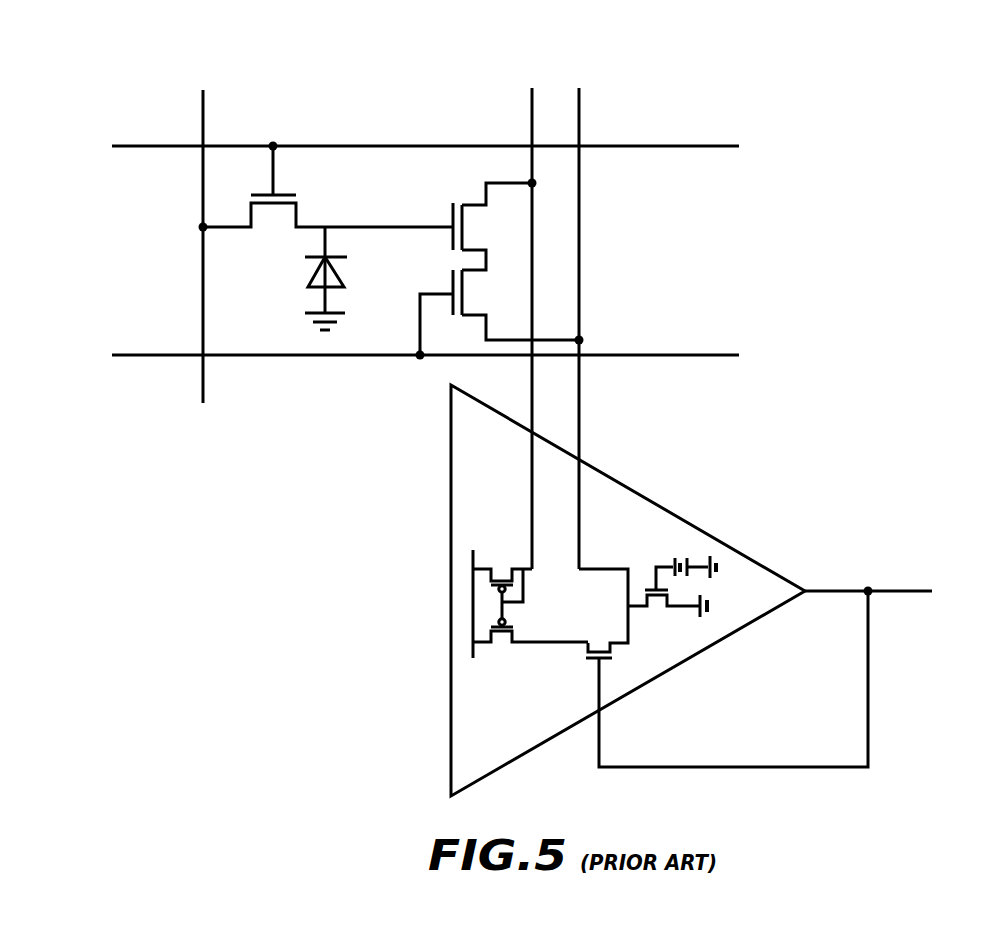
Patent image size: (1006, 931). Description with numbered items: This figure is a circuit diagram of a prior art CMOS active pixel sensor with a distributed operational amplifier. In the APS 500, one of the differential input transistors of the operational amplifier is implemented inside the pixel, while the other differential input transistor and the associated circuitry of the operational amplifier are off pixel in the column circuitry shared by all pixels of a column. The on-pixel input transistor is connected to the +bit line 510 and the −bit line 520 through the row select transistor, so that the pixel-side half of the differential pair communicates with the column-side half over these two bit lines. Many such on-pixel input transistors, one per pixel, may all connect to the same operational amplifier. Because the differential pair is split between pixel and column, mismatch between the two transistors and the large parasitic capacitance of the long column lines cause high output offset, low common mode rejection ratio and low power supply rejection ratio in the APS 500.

The APS 500 is at (524, 425).
The +bit line 510 is at (532, 122).
The −bit line 520 is at (579, 122).